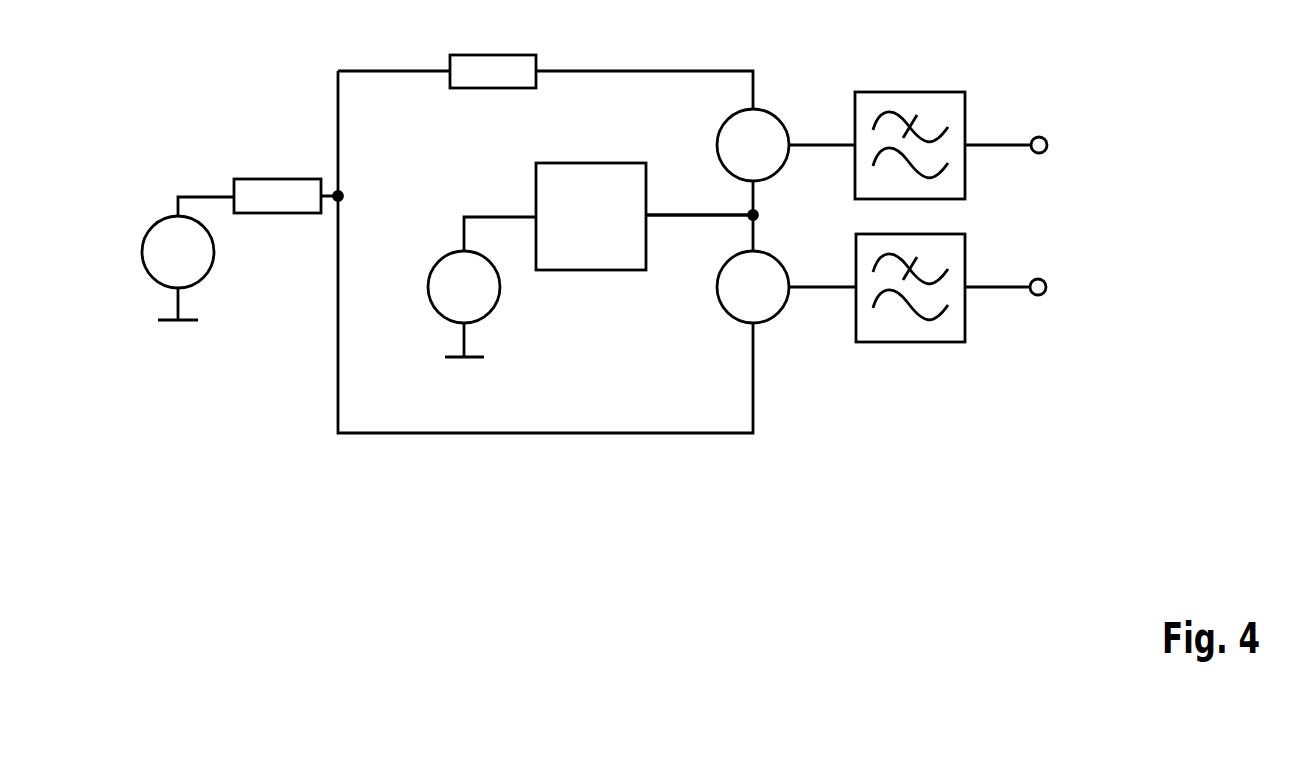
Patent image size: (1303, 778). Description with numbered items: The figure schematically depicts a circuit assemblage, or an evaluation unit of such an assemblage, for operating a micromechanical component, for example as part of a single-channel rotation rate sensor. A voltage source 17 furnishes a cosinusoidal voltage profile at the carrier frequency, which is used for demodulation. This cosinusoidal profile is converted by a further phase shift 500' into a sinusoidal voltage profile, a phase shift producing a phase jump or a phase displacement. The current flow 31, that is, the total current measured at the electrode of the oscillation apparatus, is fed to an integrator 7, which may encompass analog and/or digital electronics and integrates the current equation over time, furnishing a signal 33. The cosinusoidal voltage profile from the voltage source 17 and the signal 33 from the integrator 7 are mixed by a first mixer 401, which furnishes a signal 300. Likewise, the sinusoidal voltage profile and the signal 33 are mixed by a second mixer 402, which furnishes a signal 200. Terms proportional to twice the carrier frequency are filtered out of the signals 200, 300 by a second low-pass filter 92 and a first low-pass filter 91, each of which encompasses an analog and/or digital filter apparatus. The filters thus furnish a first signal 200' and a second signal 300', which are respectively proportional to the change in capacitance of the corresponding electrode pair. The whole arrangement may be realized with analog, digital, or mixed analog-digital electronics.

The voltage source 17 is at (193, 268).
The further phase shift 500' is at (493, 44).
The integrator 7 is at (591, 163).
The current flow 31 is at (480, 304).
The signal 33 is at (683, 215).
The second mixer 402 is at (777, 162).
The first mixer 401 is at (777, 303).
The signal 200 is at (822, 116).
The second low-pass filter 92 is at (911, 92).
The first signal 200' is at (1016, 117).
The signal 300 is at (822, 318).
The first low-pass filter 91 is at (908, 342).
The second signal 300' is at (1016, 319).